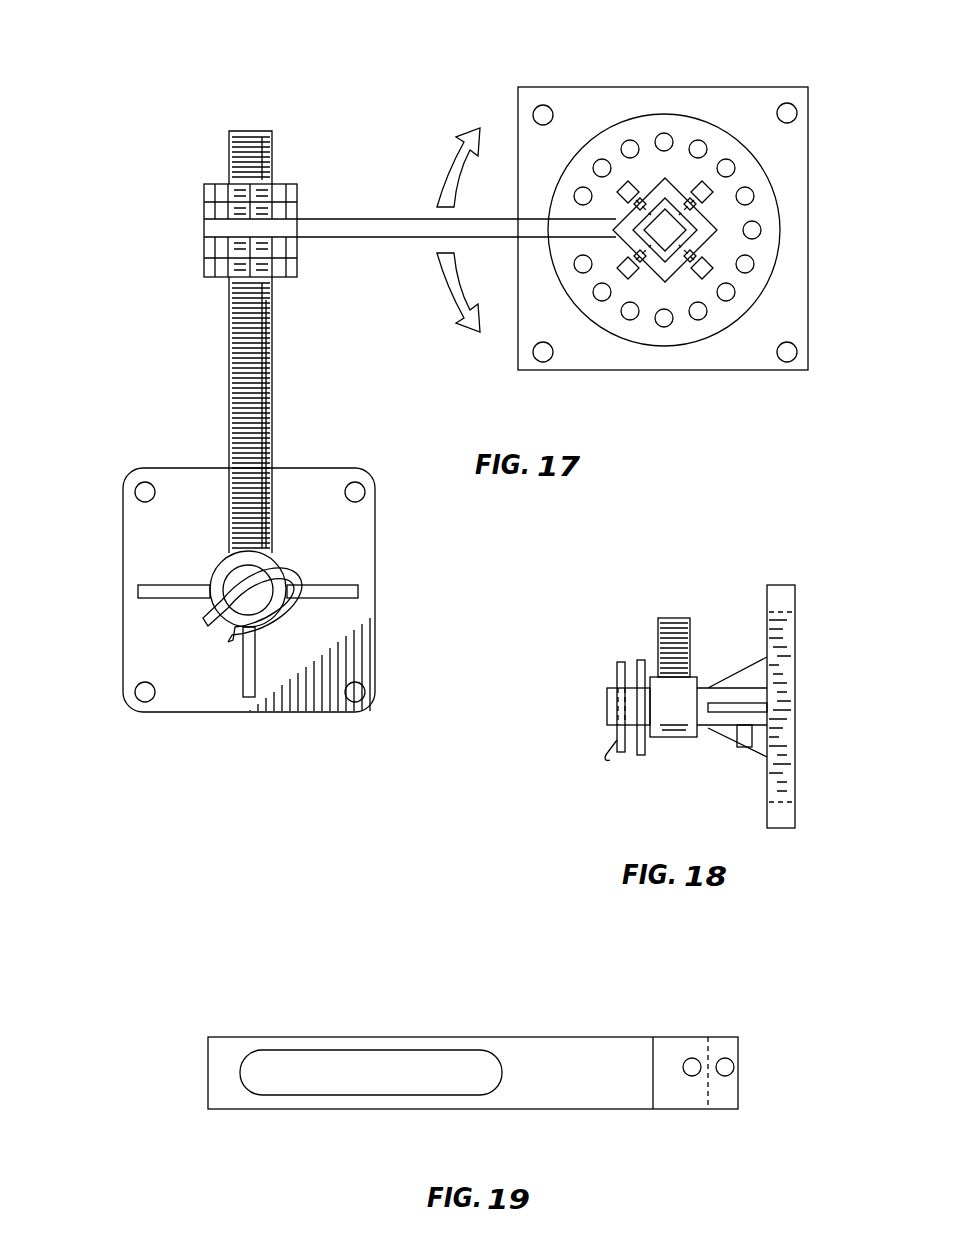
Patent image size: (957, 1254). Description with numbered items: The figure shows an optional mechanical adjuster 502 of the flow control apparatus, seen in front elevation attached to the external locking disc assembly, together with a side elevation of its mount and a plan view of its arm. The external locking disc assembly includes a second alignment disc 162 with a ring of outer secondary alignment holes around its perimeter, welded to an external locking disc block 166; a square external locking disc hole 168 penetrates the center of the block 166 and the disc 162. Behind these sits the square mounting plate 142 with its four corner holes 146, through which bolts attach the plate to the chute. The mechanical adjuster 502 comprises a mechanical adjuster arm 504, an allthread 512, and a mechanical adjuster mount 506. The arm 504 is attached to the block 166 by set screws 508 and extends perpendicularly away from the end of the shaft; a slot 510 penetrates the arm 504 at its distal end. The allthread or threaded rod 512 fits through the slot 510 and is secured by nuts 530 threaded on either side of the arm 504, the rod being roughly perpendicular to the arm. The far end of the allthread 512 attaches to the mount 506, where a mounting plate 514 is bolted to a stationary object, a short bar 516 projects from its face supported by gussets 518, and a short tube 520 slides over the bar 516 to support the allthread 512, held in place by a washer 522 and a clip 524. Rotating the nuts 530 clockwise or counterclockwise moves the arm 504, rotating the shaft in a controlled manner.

In FIG. 17, the mechanical adjuster 502 is at (360, 319).
In FIG. 17, the mechanical adjuster arm 504 is at (385, 219).
In FIG. 19, the mechanical adjuster arm 504 is at (435, 1037).
In FIG. 17, the mechanical adjuster mount 506 is at (190, 712).
In FIG. 19, the set screws 508 is at (694, 1058).
In FIG. 19, the slot 510 is at (379, 1085).
In FIG. 17, the allthread 512 is at (272, 430).
In FIG. 17, the mounting plate 514 is at (376, 550).
In FIG. 18, the mounting plate 514 is at (797, 685).
In FIG. 17, the bar 516 is at (245, 588).
In FIG. 18, the bar 516 is at (700, 737).
In FIG. 17, the gussets 518 is at (138, 592).
In FIG. 18, the gussets 518 is at (755, 662).
In FIG. 18, the tube 520 is at (652, 740).
In FIG. 17, the washer 522 is at (273, 634).
In FIG. 18, the washer 522 is at (641, 660).
In FIG. 17, the clip 524 is at (205, 615).
In FIG. 18, the clip 524 is at (615, 665).
In FIG. 17, the nuts 530 is at (203, 212).
In FIG. 17, the mounting plate 142 is at (808, 197).
In FIG. 17, the corner holes 146 is at (545, 105).
In FIG. 17, the second alignment disc 162 is at (745, 318).
In FIG. 17, the external locking disc block 166 is at (712, 217).
In FIG. 17, the external locking disc hole 168 is at (668, 222).